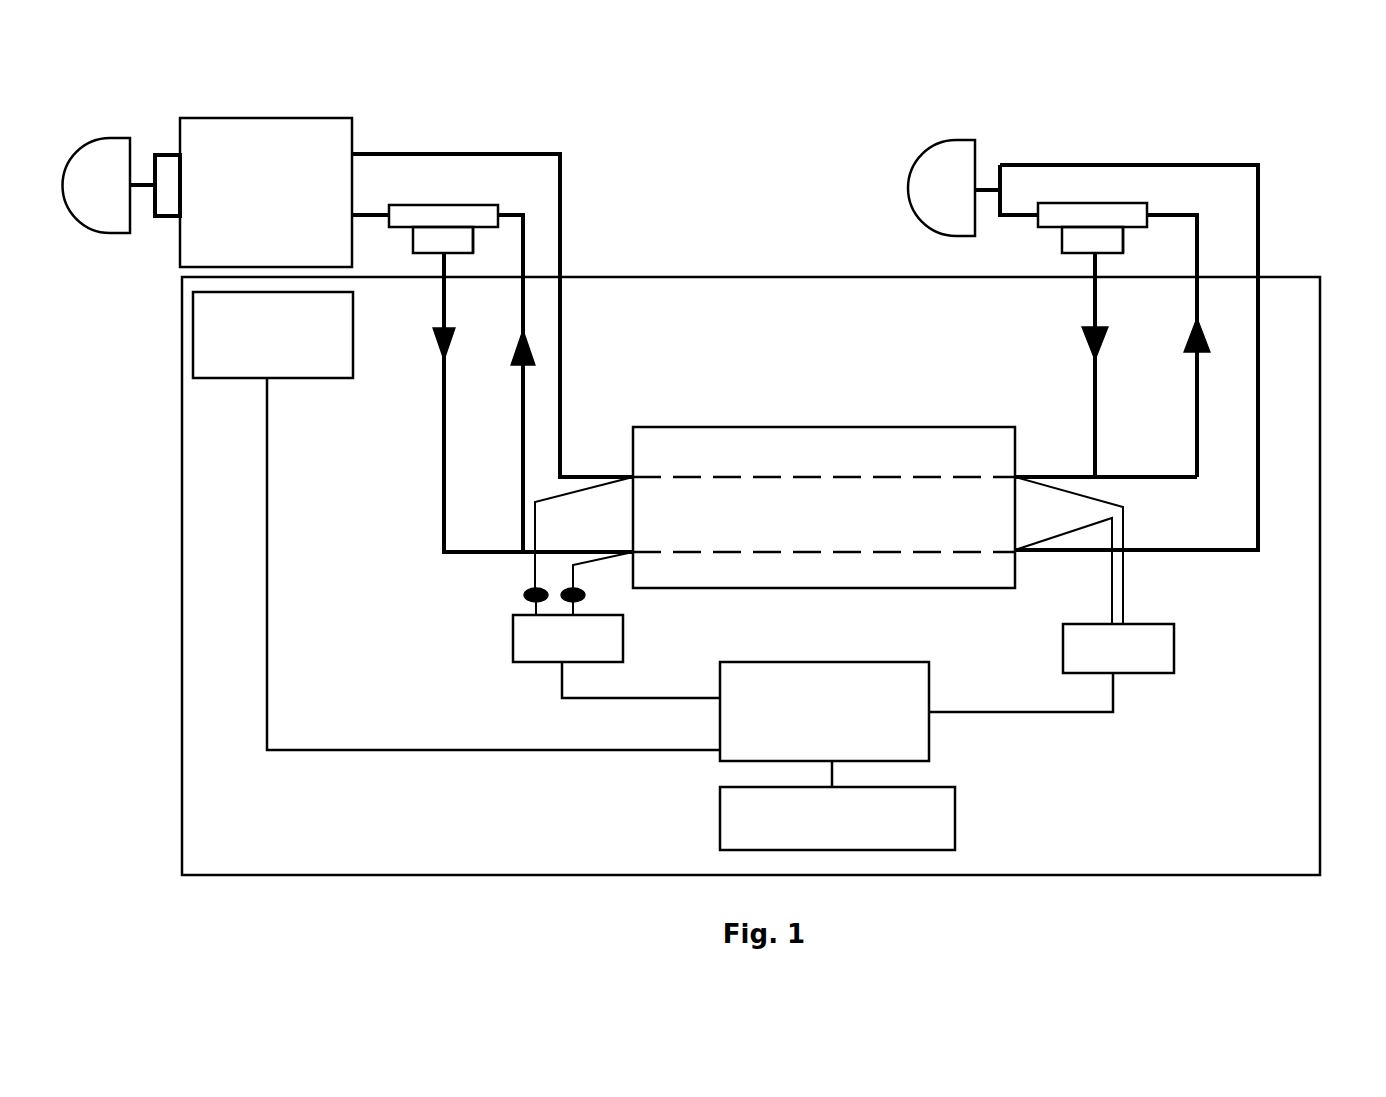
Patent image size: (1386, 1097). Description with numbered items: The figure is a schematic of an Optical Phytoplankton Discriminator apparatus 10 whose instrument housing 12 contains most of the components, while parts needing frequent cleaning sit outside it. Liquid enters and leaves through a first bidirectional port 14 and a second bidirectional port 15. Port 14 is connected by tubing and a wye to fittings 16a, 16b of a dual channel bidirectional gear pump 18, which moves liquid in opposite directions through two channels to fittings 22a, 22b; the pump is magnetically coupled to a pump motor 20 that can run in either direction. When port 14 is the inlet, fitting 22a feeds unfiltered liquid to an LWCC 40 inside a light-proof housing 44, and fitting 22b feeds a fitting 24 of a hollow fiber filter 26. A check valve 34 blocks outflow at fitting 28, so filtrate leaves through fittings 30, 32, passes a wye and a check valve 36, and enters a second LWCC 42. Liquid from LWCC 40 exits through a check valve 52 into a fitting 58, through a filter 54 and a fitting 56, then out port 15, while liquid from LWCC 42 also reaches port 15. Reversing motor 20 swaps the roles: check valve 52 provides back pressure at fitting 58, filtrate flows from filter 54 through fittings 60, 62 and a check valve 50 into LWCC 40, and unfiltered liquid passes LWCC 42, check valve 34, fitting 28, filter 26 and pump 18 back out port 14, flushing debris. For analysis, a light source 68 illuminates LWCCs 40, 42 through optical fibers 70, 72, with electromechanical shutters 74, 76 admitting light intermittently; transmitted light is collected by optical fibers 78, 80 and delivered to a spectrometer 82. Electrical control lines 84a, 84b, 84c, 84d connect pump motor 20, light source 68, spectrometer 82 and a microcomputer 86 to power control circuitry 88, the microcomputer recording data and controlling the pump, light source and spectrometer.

The Optical Phytoplankton Discriminator apparatus 10 is at (1213, 132).
The instrument housing 12 is at (1320, 665).
The first bidirectional port 14 is at (100, 155).
The second bidirectional port 15 is at (920, 177).
The fitting 16a is at (160, 155).
The fitting 16b is at (165, 218).
The dual channel bidirectional gear pump 18 is at (258, 133).
The pump motor 20 is at (210, 338).
The fitting 22a is at (353, 152).
The fitting 22b is at (356, 214).
The fitting 24 is at (385, 218).
The filter 26 is at (465, 210).
The fitting 28 is at (500, 213).
The fitting 30 is at (418, 232).
The fitting 32 is at (475, 230).
The check valve 34 is at (535, 347).
The check valve 36 is at (435, 341).
The LWCC 40 is at (785, 477).
The LWCC 42 is at (808, 550).
The light-proof housing 44 is at (735, 427).
The check valve 50 is at (1085, 340).
The check valve 52 is at (1185, 340).
The filter 54 is at (1105, 208).
The fitting 56 is at (1040, 210).
The fitting 58 is at (1150, 212).
The fitting 60 is at (1060, 235).
The fitting 62 is at (1122, 235).
The light source 68 is at (603, 663).
The optical fiber 70 is at (568, 497).
The optical fiber 72 is at (596, 551).
The electromechanical shutter 74 is at (524, 595).
The electromechanical shutter 76 is at (590, 596).
The optical fiber 78 is at (1125, 505).
The optical fiber 80 is at (1110, 586).
The spectrometer 82 is at (1150, 624).
The electrical control line 84a is at (400, 750).
The electrical control line 84b is at (598, 698).
The electrical control line 84c is at (1047, 712).
The electrical control line 84d is at (832, 775).
The microcomputer 86 is at (955, 818).
The power control circuitry 88 is at (930, 690).